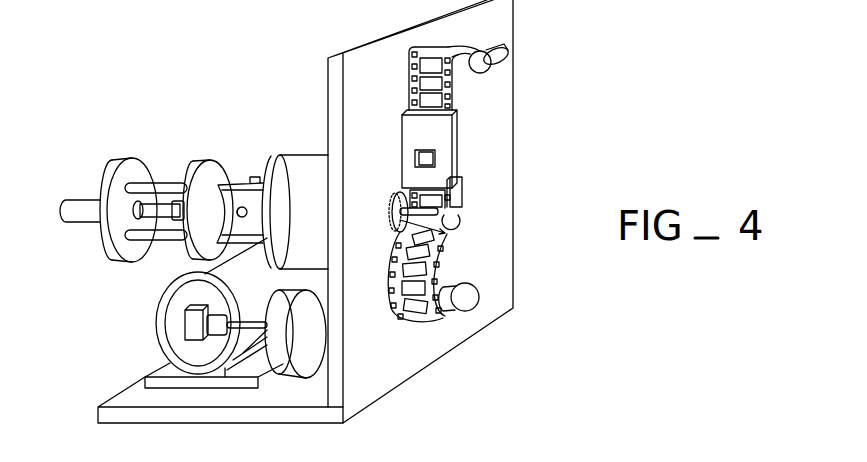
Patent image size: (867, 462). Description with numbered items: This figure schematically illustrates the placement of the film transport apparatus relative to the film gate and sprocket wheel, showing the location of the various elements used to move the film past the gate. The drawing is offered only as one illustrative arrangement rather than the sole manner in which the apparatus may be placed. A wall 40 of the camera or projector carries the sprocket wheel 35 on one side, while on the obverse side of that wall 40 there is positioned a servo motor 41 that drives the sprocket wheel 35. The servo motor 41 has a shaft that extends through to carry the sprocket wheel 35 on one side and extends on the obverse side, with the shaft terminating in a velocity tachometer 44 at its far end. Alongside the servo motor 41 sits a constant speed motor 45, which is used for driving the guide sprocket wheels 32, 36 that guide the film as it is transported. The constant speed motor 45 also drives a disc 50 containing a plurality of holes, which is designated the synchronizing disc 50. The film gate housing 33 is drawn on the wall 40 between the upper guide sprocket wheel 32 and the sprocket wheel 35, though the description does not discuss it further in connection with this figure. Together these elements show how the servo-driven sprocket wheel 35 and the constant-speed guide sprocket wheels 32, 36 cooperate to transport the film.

The guide sprocket wheel 32 is at (486, 67).
The film gate housing 33 is at (452, 140).
The sprocket wheel 35 is at (452, 237).
The guide sprocket wheel 36 is at (470, 297).
The wall 40 is at (367, 50).
The servo motor 41 is at (283, 156).
The velocity tachometer 44 is at (72, 203).
The constant speed motor 45 is at (158, 322).
The synchronizing disc 50 is at (300, 376).